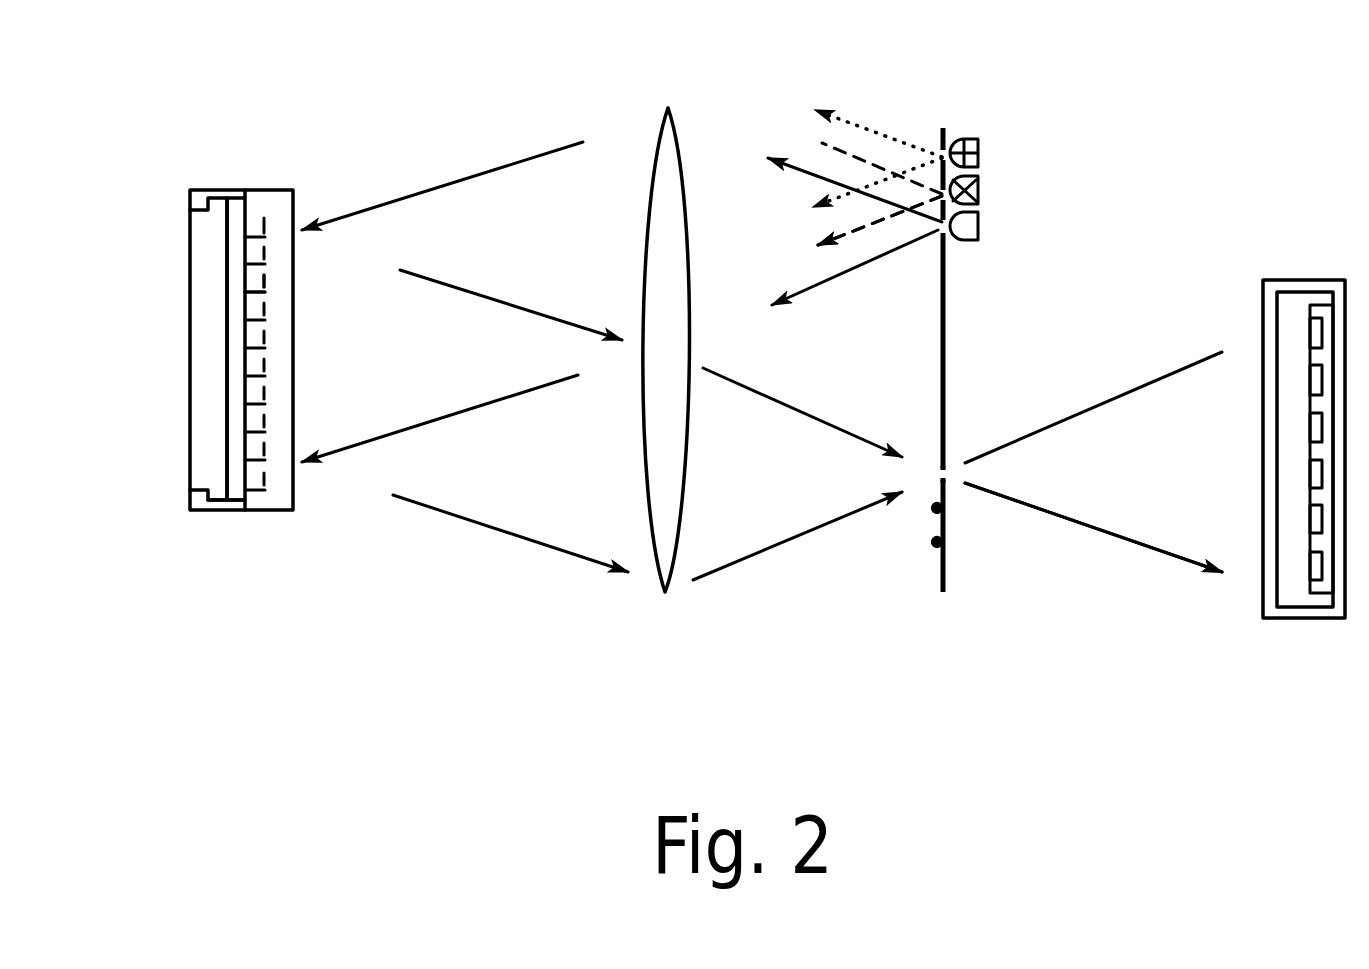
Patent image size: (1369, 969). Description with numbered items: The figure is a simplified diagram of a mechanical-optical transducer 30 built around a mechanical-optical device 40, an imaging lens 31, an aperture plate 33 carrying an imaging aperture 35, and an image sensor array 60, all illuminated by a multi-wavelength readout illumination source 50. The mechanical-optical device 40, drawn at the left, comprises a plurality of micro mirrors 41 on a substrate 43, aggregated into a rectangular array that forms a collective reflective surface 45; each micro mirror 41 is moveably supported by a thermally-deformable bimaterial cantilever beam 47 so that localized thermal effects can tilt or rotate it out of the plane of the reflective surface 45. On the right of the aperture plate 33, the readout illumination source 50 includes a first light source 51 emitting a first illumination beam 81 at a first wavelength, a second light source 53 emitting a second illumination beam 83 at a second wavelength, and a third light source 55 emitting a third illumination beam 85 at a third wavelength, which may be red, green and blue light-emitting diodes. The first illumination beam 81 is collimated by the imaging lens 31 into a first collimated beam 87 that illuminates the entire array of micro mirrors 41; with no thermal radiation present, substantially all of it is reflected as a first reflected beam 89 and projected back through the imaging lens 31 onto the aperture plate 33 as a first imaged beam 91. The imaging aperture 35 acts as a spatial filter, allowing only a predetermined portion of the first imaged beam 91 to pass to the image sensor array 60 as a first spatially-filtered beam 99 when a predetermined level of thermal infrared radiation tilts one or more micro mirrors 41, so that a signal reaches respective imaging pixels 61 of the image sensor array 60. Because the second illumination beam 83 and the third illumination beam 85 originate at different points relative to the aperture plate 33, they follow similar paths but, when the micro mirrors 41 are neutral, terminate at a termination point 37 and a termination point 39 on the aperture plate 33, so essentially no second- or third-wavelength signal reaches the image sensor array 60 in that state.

The mechanical-optical transducer 30 is at (400, 727).
The imaging lens 31 is at (668, 108).
The aperture plate 33 is at (950, 372).
The imaging aperture 35 is at (950, 477).
The termination point 37 is at (937, 508).
The termination point 39 is at (937, 542).
The mechanical-optical device 40 is at (268, 186).
The micro mirrors 41 is at (265, 335).
The substrate 43 is at (225, 403).
The collective reflective surface 45 is at (265, 290).
The thermally-deformable bimaterial cantilever beam 47 is at (250, 492).
The multi-wavelength readout illumination source 50 is at (1048, 178).
The first light source 51 is at (970, 238).
The second light source 53 is at (980, 188).
The third light source 55 is at (968, 140).
The image sensor array 60 is at (1275, 280).
The imaging pixels 61 is at (1313, 562).
The first illumination beam 81 is at (873, 260).
The second illumination beam 83 is at (816, 239).
The third illumination beam 85 is at (853, 122).
The first collimated beam 87 is at (488, 172).
The first reflected beam 89 is at (520, 535).
The first imaged beam 91 is at (708, 575).
The first spatially-filtered beam 99 is at (1093, 460).